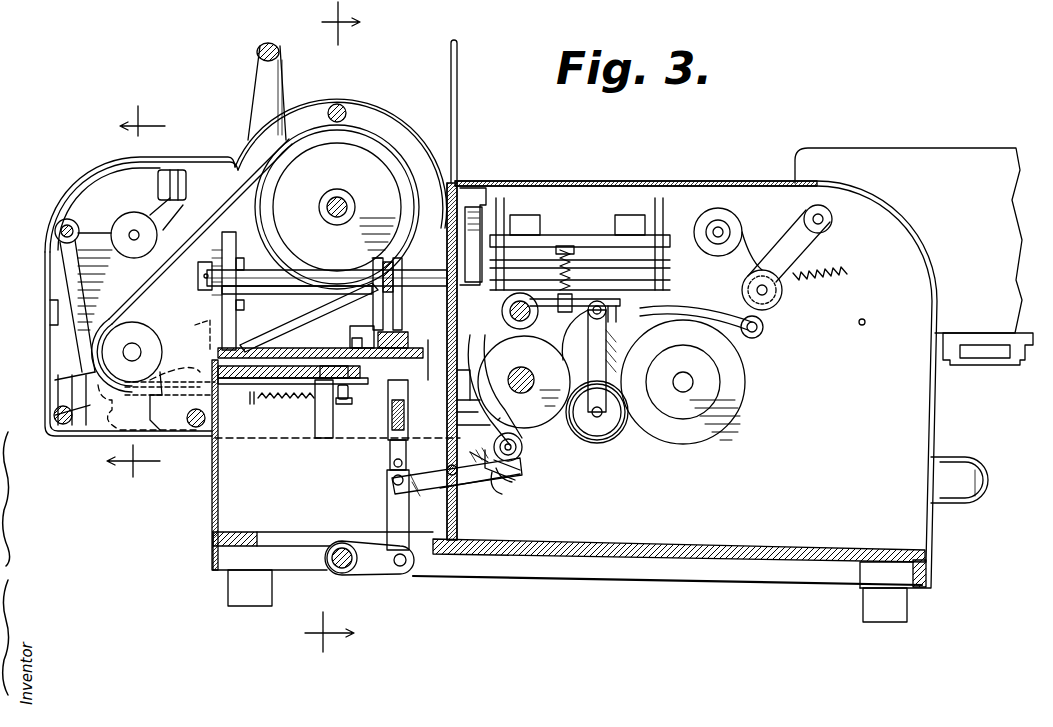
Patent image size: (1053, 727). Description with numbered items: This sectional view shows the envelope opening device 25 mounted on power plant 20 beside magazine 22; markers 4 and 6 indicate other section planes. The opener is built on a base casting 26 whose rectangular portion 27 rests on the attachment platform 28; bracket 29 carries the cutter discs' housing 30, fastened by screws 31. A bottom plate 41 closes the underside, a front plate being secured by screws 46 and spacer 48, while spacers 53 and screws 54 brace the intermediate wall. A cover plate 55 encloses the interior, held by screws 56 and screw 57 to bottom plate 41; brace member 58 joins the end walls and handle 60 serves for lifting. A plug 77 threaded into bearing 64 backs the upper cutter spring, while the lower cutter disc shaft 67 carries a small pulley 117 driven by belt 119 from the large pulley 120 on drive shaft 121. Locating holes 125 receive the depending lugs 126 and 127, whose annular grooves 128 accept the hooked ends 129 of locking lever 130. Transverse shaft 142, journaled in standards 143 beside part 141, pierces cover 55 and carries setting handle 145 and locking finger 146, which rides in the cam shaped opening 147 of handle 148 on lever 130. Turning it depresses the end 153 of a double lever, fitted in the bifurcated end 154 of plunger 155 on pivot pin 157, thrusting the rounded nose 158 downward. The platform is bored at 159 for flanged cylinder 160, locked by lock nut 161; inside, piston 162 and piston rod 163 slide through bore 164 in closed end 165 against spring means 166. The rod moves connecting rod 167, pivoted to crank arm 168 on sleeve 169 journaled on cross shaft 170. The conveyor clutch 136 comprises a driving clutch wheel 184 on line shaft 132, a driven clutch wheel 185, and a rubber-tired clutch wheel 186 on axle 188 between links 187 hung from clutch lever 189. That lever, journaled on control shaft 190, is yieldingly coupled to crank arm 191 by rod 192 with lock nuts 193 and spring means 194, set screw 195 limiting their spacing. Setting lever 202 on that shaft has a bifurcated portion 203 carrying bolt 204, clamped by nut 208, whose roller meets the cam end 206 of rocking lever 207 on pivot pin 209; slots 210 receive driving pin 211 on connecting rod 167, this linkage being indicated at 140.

The section line 4- 4 is at (332, 327).
The section line 6- 6 is at (136, 291).
The power plant 20 is at (712, 178).
The magazine 22 is at (918, 150).
The envelope opening device 25 is at (59, 173).
The base casting 26 is at (331, 341).
The rectangular portion 27 is at (308, 358).
The power plant attachment platform 28 is at (240, 385).
The bracket 29 is at (232, 245).
The cutter discs' housing 30 is at (112, 160).
The screws 31 is at (246, 258).
The bottom plate 41 is at (45, 360).
The screws 46 is at (485, 470).
The spacer 48 is at (52, 440).
The spacers 53 is at (56, 249).
The screws 54 is at (200, 278).
The cover plate 55 is at (385, 122).
The screws 56 is at (215, 345).
The screw 57 is at (48, 320).
The brace member 58 is at (343, 104).
The handle 60 is at (276, 48).
The bearing 64 is at (128, 220).
The lower cutter disc shaft 67 is at (130, 352).
The plug 77 is at (148, 231).
The small pulley 117 is at (150, 335).
The belt 119 is at (126, 305).
The large pulley 120 is at (378, 158).
The drive shaft 121 is at (350, 200).
The locating holes 125 is at (398, 415).
The cylindrical lug 126 is at (340, 400).
The rear cylindrical lug 127 is at (316, 428).
The annular groove 128 is at (336, 376).
The hooked ends 129 is at (345, 397).
The locking lever 130 is at (262, 398).
The line shaft 132 is at (524, 382).
The conveyor clutch 136 is at (632, 448).
The lever assembly 140 is at (567, 484).
The carriage post 141 is at (426, 268).
The transverse shaft 142 is at (312, 268).
The standards 143 is at (240, 298).
The setting handle 145 is at (458, 112).
The locking finger 146 is at (150, 398).
The cam shaped opening 147 is at (155, 405).
The handle 148 is at (138, 403).
The end of double-ended lever 153 is at (500, 312).
The bifurcated end 154 is at (500, 320).
The plunger 155 is at (352, 348).
The plunger pivot pin 157 is at (370, 346).
The rounded nose 158 is at (500, 398).
The bore 159 is at (475, 380).
The flanged cylinder 160 is at (490, 402).
The lock nut 161 is at (470, 386).
The piston 162 is at (464, 418).
The piston rod 163 is at (367, 468).
The bore 164 is at (388, 448).
The closed end 165 is at (392, 436).
The spring means 166 is at (500, 430).
The connecting rod 167 is at (388, 521).
The crank arm 168 is at (378, 572).
The sleeve 169 is at (345, 575).
The cross shaft 170 is at (336, 574).
The driving clutch wheel 184 is at (540, 425).
The driven clutch wheel 185 is at (740, 415).
The rubber-tired clutch wheel 186 is at (597, 441).
The links 187 is at (610, 350).
The clutch wheel axle 188 is at (602, 400).
The clutch lever 189 is at (580, 325).
The control shaft 190 is at (508, 308).
The crank arm 191 is at (658, 300).
The rod 192 is at (539, 369).
The adjusting lock nuts 193 is at (558, 250).
The spring means 194 is at (548, 260).
The set screw 195 is at (658, 308).
The setting lever 202 is at (500, 407).
The bifurcated portion 203 is at (515, 462).
The bolt 204 is at (522, 450).
The cam end 206 is at (508, 475).
The rocking lever 207 is at (490, 488).
The nut 208 is at (508, 490).
The pivot pin 209 is at (458, 485).
The slots 210 is at (390, 490).
The driving pin 211 is at (392, 496).